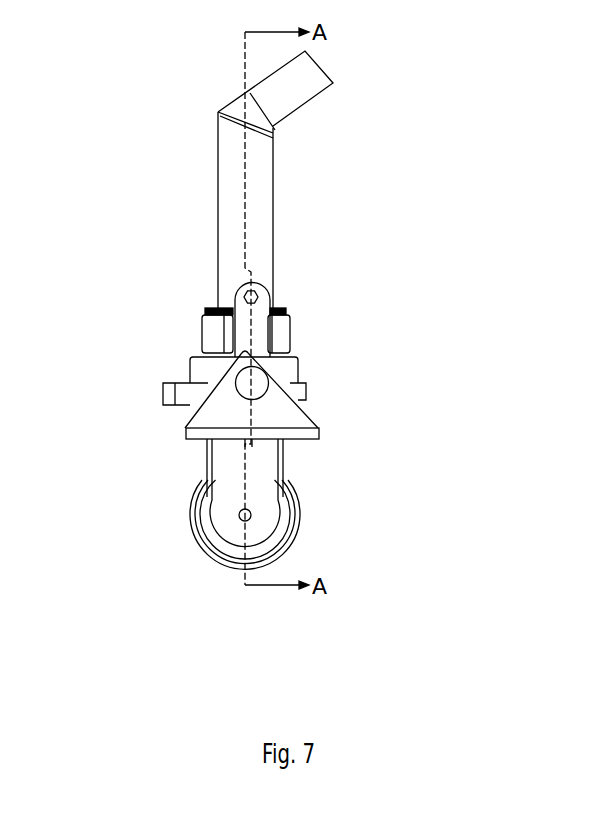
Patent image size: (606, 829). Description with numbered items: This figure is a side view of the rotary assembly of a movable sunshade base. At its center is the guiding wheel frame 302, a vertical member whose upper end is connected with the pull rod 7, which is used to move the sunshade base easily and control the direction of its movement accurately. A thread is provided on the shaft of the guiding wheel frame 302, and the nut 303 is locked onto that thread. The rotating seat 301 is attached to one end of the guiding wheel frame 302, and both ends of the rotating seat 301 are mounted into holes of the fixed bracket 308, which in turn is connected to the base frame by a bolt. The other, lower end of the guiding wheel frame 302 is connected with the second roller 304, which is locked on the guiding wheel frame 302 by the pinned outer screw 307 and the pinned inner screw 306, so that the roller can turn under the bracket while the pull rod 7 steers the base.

The pull rod 7 is at (298, 83).
The rotating seat 301 is at (220, 310).
The guiding wheel frame 302 is at (260, 212).
The nut 303 is at (280, 333).
The second roller 304 is at (288, 552).
The pinned inner screw 306 is at (251, 514).
The pinned outer screw 307 is at (243, 515).
The fixed bracket 308 is at (302, 418).